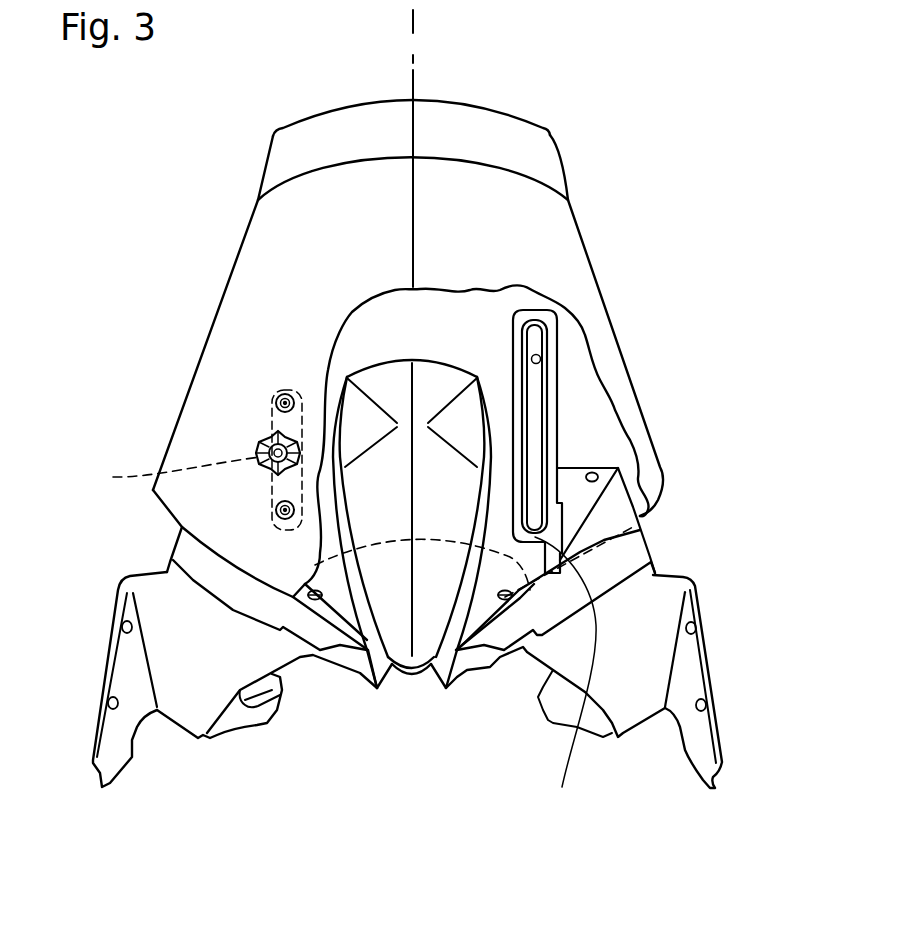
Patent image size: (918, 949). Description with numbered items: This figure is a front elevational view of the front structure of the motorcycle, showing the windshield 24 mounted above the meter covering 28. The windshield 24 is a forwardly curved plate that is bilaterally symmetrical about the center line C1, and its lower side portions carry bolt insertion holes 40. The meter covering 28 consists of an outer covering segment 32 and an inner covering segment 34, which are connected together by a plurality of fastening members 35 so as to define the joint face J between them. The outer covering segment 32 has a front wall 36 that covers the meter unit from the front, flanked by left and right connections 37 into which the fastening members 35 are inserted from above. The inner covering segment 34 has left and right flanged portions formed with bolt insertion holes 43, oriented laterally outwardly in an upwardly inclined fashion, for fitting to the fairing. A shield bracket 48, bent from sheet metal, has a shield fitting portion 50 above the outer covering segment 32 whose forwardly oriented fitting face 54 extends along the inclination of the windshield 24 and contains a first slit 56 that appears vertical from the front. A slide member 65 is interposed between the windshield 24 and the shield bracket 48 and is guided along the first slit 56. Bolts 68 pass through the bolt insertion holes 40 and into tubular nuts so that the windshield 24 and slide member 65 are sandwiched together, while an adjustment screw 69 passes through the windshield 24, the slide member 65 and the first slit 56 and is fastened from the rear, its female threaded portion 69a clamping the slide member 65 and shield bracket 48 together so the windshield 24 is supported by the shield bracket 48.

The windshield 24 is at (263, 230).
The meter covering 28 is at (778, 513).
The outer covering segment 32 is at (577, 510).
The inner covering segment 34 is at (657, 600).
The fastening member 35 is at (597, 470).
The front wall 36 is at (425, 383).
The connection 37 is at (607, 498).
The bolt insertion hole 40 is at (170, 470).
The bolt insertion hole 43 is at (110, 700).
The shield bracket 48 is at (563, 387).
The shield fitting portion 50 is at (550, 433).
The fitting face 54 is at (553, 320).
The first slit 56 is at (537, 358).
The slide member 65 is at (273, 400).
The bolt 68 is at (280, 393).
The adjustment screw 69 is at (202, 415).
The female threaded portion 69a is at (267, 443).
The center line C1 is at (413, 40).
The joint face J is at (565, 679).